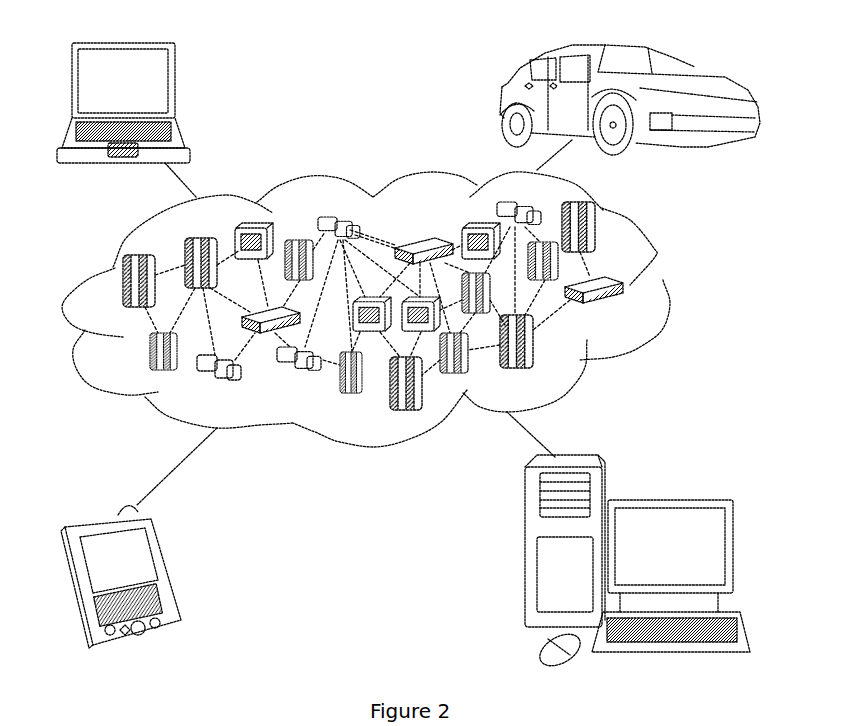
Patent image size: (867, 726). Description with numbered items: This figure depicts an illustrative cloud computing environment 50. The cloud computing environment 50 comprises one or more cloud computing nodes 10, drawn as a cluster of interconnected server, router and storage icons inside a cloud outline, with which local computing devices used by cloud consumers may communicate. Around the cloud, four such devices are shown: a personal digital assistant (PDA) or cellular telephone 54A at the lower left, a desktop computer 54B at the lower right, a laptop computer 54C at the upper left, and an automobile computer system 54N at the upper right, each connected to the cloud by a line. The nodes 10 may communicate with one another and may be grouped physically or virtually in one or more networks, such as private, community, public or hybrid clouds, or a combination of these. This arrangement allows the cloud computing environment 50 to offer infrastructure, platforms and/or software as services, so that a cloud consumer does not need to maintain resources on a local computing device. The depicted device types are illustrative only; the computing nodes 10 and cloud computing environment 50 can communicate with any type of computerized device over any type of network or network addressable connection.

The cloud computing nodes 10 is at (623, 310).
The cloud computing environment 50 is at (668, 287).
The personal digital assistant (PDA) or cellular telephone 54A is at (168, 567).
The desktop computer 54B is at (667, 500).
The laptop computer 54C is at (177, 88).
The automobile computer system 54N is at (503, 102).